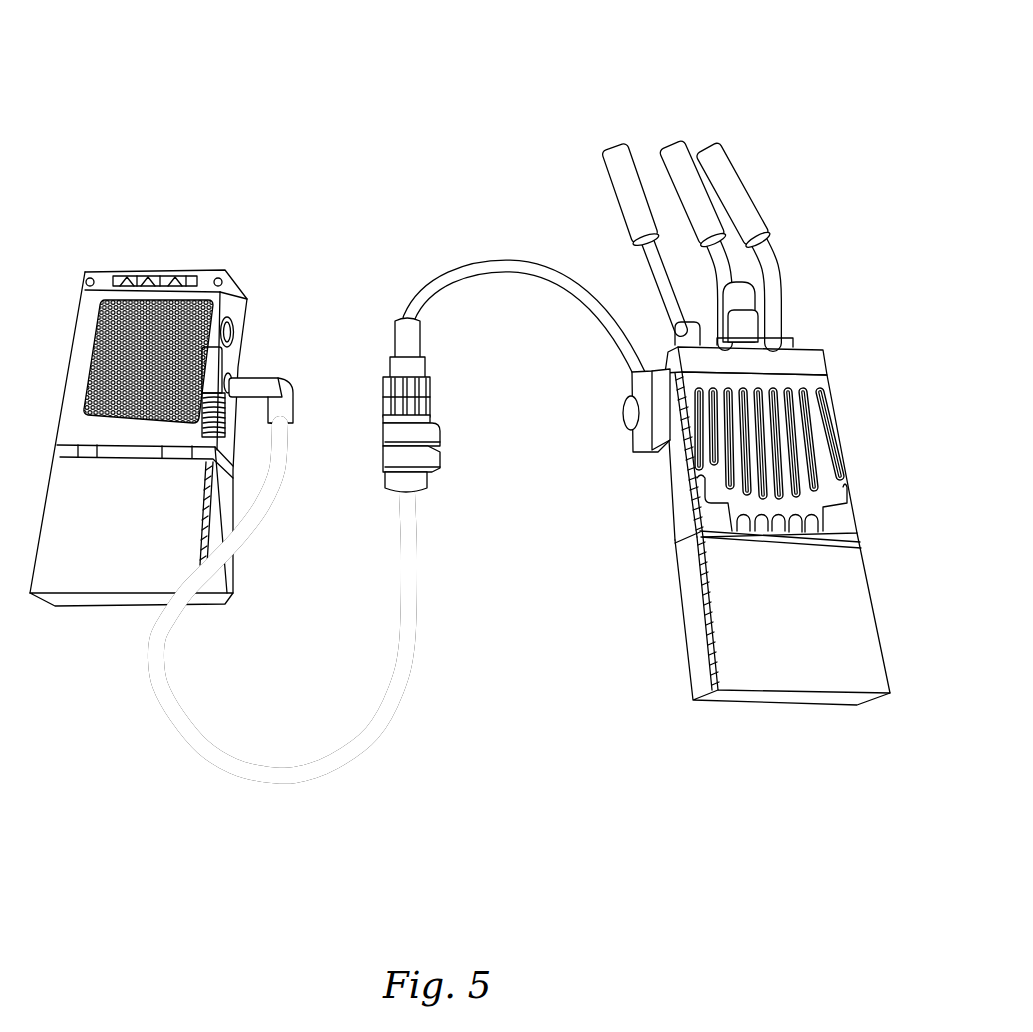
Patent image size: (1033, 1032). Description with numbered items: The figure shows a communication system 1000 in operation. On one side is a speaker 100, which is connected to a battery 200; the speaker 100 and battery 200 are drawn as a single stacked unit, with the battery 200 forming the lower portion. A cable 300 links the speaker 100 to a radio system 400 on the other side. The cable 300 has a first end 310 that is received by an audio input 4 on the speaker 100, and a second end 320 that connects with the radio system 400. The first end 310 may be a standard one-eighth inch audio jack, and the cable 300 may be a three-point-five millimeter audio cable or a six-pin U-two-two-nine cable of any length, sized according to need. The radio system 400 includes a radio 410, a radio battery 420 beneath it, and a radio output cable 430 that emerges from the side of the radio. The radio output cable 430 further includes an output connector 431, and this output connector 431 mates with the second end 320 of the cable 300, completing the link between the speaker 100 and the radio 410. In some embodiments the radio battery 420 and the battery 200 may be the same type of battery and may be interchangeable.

The system 1000 is at (264, 118).
The speaker 100 is at (233, 276).
The battery 200 is at (55, 607).
The audio input 4 is at (235, 342).
The cable 300 is at (183, 805).
The first end 310 is at (280, 378).
The second end 320 is at (440, 438).
The output connector 431 is at (430, 388).
The radio output cable 430 is at (582, 300).
The radio system 400 is at (880, 295).
The radio 410 is at (840, 425).
The radio battery 420 is at (868, 582).